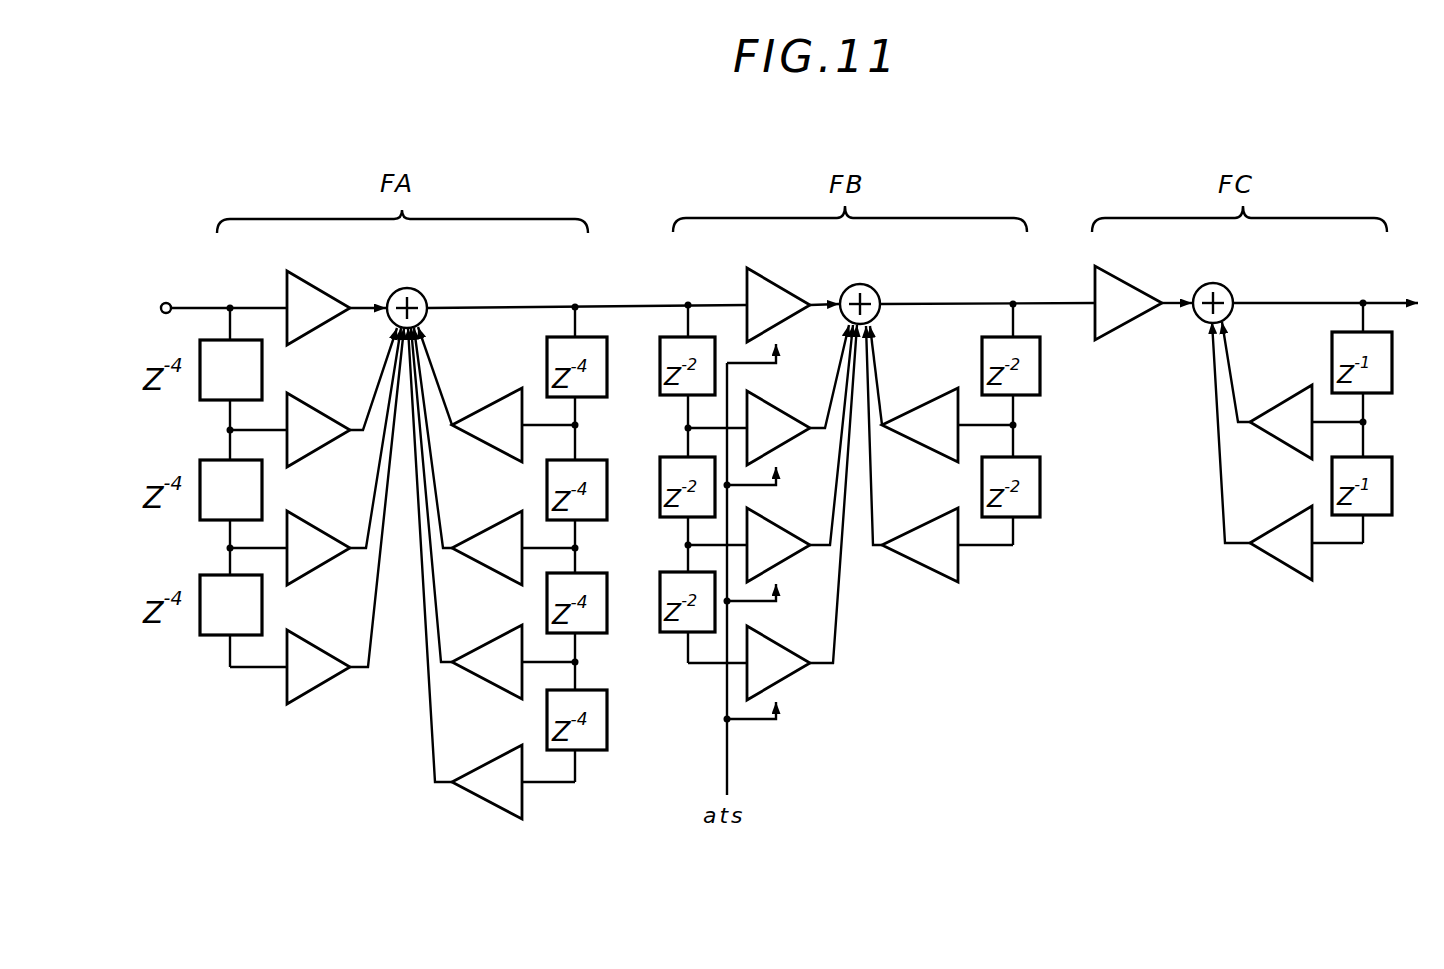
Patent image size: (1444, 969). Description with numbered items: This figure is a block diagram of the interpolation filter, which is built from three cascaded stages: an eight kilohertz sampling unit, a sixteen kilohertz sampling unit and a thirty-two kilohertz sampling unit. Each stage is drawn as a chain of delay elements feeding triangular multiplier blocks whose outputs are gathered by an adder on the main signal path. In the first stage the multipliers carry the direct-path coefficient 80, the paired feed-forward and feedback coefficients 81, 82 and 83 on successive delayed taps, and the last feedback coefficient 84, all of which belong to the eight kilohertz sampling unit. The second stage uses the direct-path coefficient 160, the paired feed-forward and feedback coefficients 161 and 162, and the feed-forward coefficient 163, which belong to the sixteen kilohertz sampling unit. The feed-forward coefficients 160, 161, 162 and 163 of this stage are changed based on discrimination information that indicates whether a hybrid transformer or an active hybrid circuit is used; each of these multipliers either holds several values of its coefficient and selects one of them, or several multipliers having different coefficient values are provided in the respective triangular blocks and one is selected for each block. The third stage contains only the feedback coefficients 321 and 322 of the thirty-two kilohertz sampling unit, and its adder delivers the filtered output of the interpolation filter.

The multiplier coefficient a80 80 is at (318, 295).
The multiplier coefficients a81 and b81 81 is at (404, 397).
The multiplier coefficients a82 and b82 82 is at (404, 456).
The multiplier coefficients a83 and b83 83 is at (404, 516).
The multiplier coefficient b84 84 is at (465, 573).
The multiplier coefficient a160 160 is at (778, 294).
The multiplier coefficients a161 and b161 161 is at (852, 395).
The multiplier coefficients a162 and b162 162 is at (852, 453).
The multiplier coefficient a163 163 is at (802, 512).
The multiplier coefficient b321 321 is at (1267, 390).
The multiplier coefficient b322 322 is at (1262, 451).